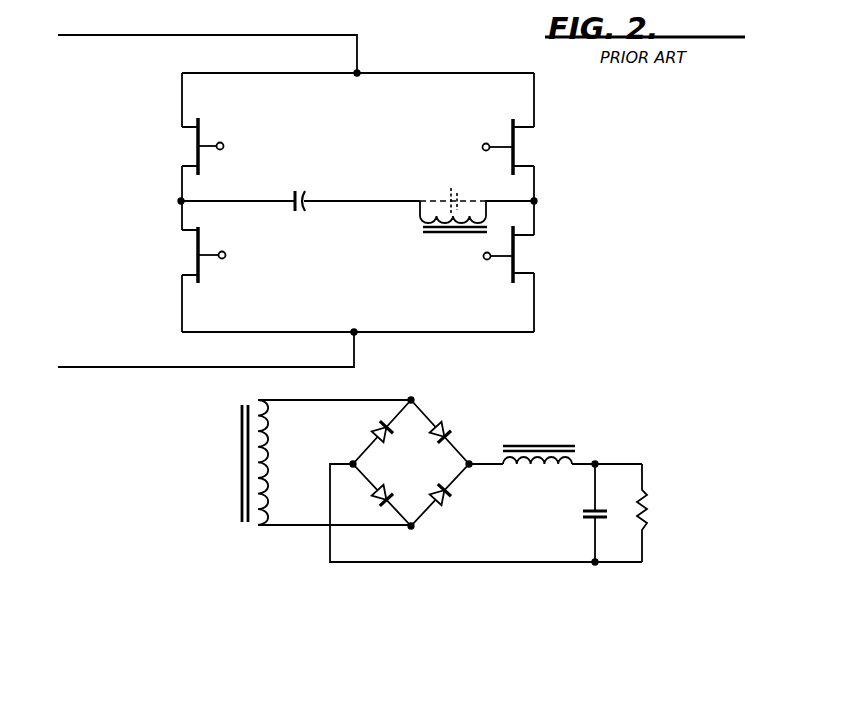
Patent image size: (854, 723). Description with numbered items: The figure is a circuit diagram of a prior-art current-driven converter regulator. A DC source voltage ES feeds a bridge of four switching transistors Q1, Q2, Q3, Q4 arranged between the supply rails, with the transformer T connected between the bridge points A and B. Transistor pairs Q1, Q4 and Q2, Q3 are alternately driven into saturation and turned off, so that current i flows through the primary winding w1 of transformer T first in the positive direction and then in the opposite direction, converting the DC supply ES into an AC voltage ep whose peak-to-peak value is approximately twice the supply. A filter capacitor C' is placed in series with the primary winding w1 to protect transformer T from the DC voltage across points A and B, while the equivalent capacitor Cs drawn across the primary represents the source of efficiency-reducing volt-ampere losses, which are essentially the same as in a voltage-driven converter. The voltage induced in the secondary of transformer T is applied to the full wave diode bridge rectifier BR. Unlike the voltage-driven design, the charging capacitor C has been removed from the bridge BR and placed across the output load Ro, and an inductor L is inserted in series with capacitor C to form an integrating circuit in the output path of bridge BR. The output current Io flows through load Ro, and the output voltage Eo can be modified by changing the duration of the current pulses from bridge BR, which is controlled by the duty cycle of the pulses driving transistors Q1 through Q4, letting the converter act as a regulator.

The source voltage ES is at (74, 35).
The switching transistor Q1 is at (187, 146).
The switching transistor Q2 is at (517, 147).
The switching transistor Q3 is at (189, 255).
The switching transistor Q4 is at (517, 254).
The point A is at (168, 202).
The point B is at (544, 201).
The filter capacitor C' is at (301, 190).
The transformer T is at (387, 376).
The primary winding w1 is at (396, 214).
The equivalent capacitor Cs is at (453, 198).
The AC voltage ep is at (486, 172).
The current i is at (412, 191).
The full wave bridge rectifier BR is at (457, 418).
The inductor L is at (539, 468).
The charging capacitor C is at (585, 513).
The output load Ro is at (629, 513).
The output current Io is at (657, 528).
The output voltage Eo is at (690, 562).